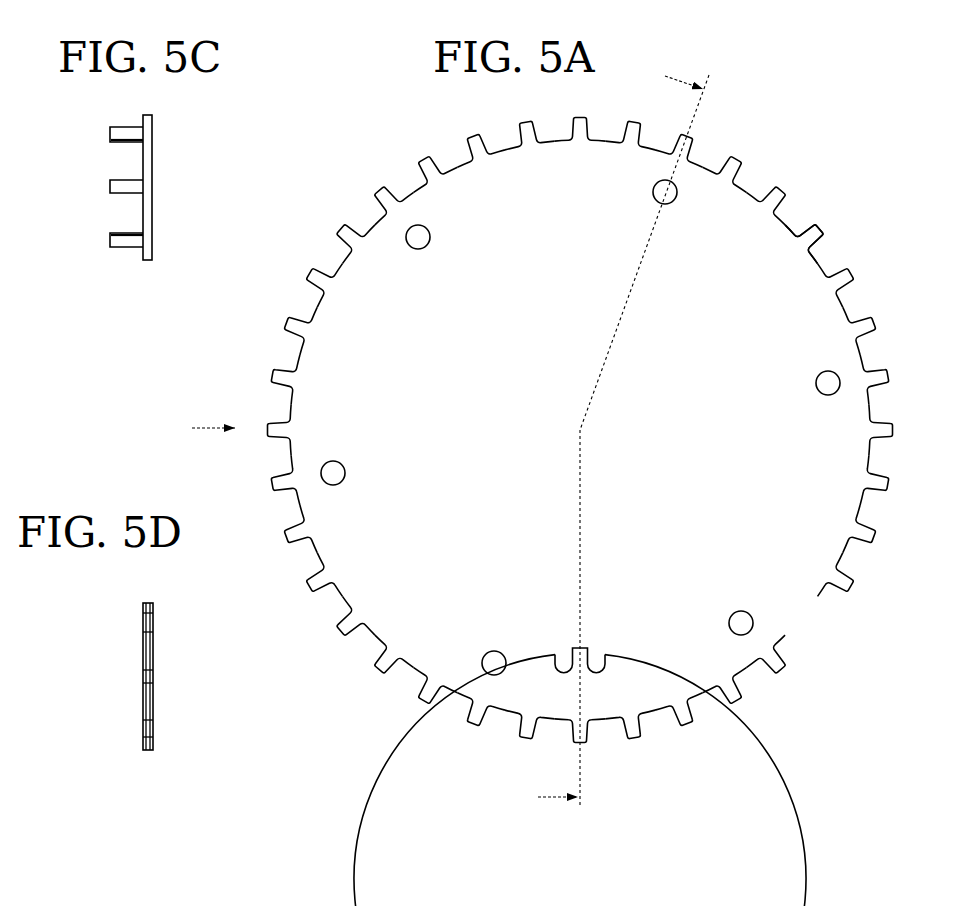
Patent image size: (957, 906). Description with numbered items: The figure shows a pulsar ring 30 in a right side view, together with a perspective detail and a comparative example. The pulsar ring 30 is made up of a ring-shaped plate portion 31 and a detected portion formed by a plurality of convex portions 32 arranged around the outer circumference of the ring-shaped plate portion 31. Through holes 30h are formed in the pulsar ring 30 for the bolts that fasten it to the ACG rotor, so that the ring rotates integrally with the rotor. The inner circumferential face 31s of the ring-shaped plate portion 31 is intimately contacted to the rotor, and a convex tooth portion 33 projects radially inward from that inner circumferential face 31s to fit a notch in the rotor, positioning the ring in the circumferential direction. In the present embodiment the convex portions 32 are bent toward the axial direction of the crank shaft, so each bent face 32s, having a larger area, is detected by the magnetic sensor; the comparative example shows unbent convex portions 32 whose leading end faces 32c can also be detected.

In FIG. 5A, the pulsar ring 30 is at (396, 135).
In FIG. 5A, the through holes 30h is at (414, 238).
In FIG. 5A, the ring-shaped plate portion 31 is at (763, 262).
In FIG. 5C, the ring-shaped plate portion 31 is at (152, 216).
In FIG. 5A, the inner circumferential face 31s is at (778, 322).
In FIG. 5A, the convex portions 32 is at (821, 231).
In FIG. 5C, the convex portions 32 is at (114, 242).
In FIG. 5D, the convex portions 32 is at (143, 678).
In FIG. 5C, the bent face 32s is at (117, 189).
In FIG. 5D, the leading end faces 32c is at (153, 622).
In FIG. 5A, the convex tooth portion 33 is at (586, 648).